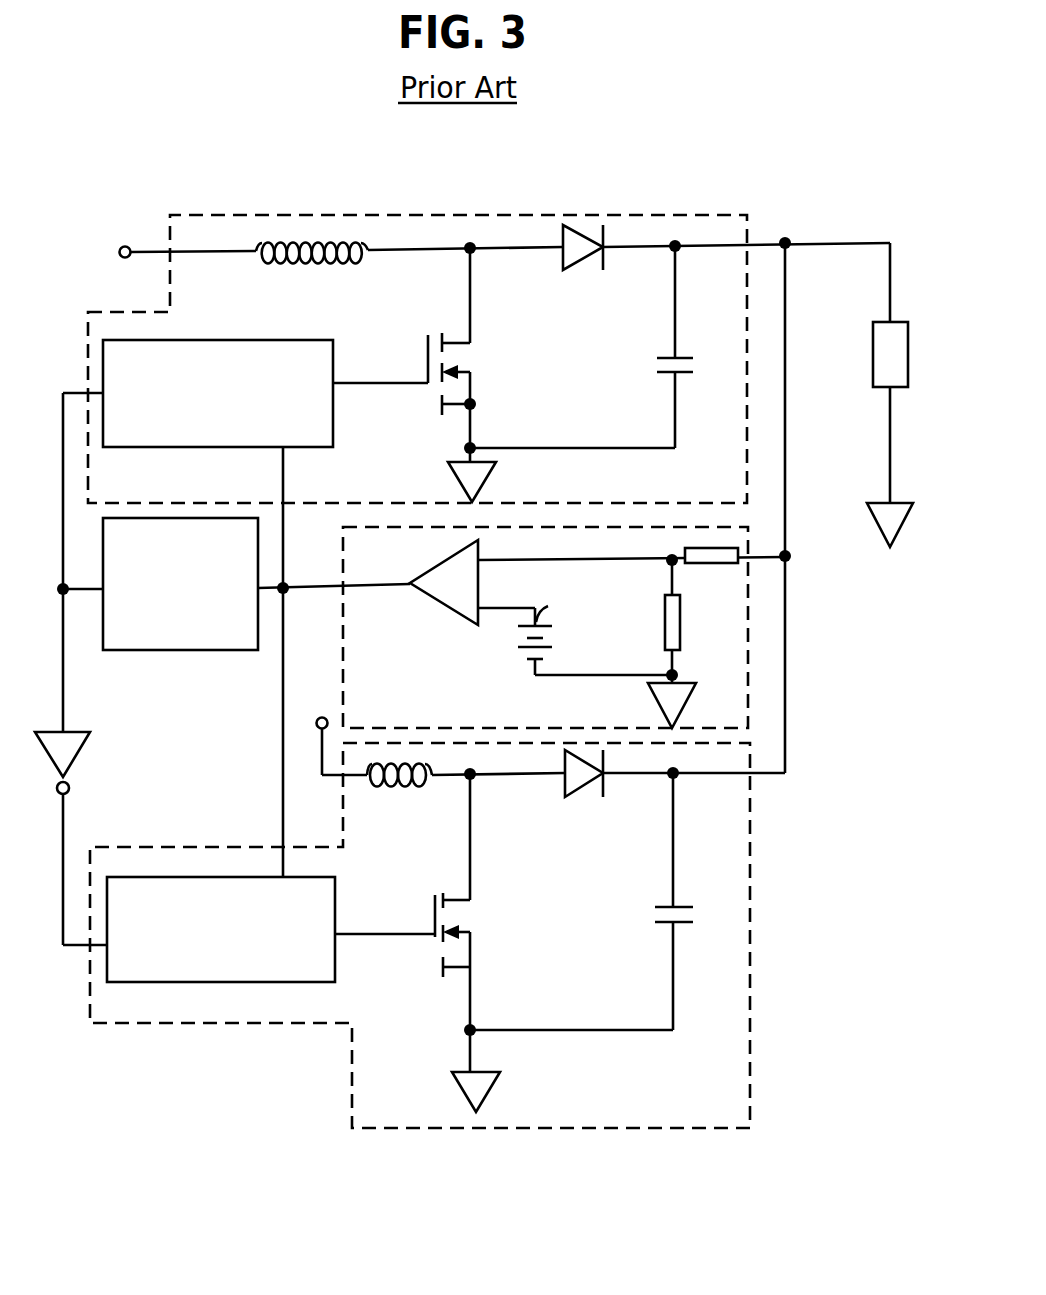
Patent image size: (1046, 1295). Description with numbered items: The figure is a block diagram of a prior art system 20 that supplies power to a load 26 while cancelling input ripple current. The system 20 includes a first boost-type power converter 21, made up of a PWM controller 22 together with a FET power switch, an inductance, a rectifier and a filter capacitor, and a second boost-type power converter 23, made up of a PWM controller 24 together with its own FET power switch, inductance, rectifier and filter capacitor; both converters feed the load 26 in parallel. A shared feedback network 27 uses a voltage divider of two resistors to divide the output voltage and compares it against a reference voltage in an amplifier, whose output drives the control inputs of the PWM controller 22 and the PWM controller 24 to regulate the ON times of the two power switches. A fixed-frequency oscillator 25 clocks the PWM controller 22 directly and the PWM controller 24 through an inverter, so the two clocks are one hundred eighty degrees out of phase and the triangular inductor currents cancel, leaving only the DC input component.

The prior art system 20 is at (430, 188).
The first boost-type power converter 21 is at (472, 214).
The PWM controller 22 is at (333, 366).
The second boost-type power converter 23 is at (750, 848).
The PWM controller 24 is at (337, 899).
The fixed-frequency oscillator 25 is at (152, 652).
The load 26 is at (873, 343).
The feedback network 27 is at (748, 679).